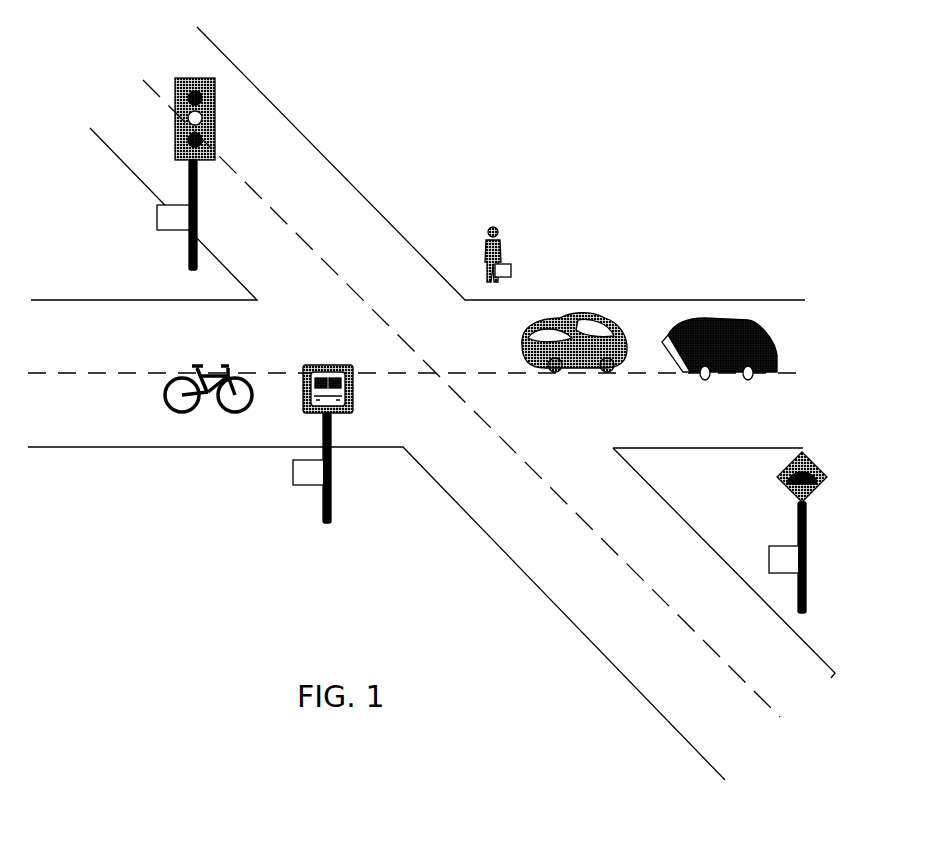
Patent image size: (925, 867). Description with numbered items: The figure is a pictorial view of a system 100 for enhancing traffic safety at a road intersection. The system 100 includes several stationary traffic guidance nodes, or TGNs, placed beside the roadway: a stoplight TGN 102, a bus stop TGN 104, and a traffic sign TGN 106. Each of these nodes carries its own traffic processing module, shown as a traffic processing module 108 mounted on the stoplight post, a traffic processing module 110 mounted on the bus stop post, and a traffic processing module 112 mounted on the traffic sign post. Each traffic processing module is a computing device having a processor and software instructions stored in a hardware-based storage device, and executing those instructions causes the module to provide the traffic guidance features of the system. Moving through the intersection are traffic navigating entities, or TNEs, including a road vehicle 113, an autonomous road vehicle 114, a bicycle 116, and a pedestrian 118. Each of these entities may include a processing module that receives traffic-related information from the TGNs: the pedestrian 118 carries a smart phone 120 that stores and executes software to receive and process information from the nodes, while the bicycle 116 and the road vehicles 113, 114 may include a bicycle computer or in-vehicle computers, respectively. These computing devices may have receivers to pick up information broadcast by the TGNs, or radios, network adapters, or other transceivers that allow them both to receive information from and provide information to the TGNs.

The system 100 is at (672, 133).
The stoplight TGN 102 is at (175, 120).
The bus stop TGN 104 is at (353, 388).
The traffic sign TGN 106 is at (777, 477).
The traffic processing module 108 is at (157, 217).
The traffic processing module 110 is at (293, 472).
The traffic processing module 112 is at (769, 560).
The road vehicle 113 is at (727, 318).
The autonomous road vehicle 114 is at (583, 315).
The bicycle 116 is at (165, 387).
The pedestrian 118 is at (505, 245).
The smart phone 120 is at (512, 271).